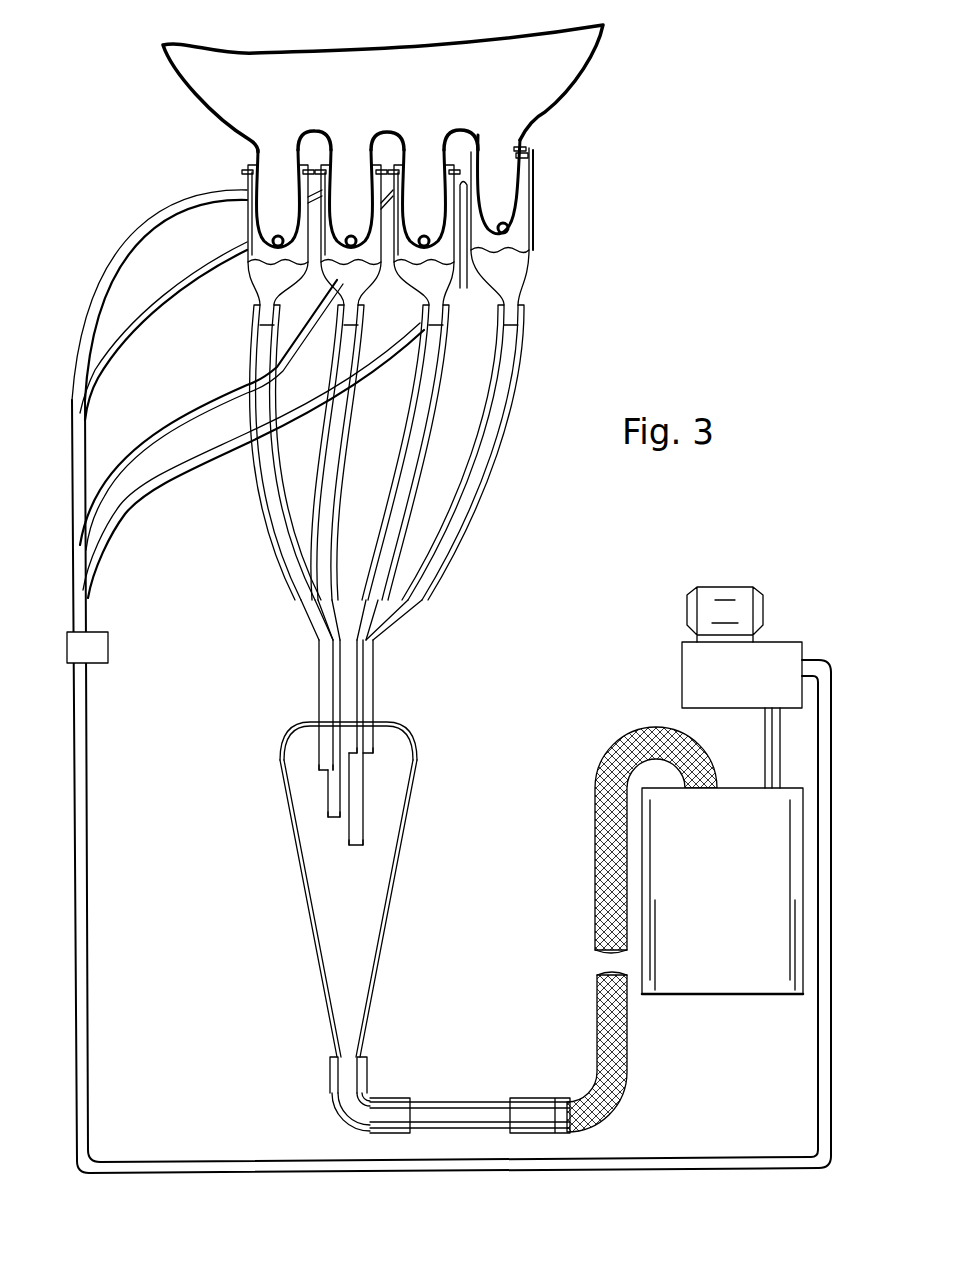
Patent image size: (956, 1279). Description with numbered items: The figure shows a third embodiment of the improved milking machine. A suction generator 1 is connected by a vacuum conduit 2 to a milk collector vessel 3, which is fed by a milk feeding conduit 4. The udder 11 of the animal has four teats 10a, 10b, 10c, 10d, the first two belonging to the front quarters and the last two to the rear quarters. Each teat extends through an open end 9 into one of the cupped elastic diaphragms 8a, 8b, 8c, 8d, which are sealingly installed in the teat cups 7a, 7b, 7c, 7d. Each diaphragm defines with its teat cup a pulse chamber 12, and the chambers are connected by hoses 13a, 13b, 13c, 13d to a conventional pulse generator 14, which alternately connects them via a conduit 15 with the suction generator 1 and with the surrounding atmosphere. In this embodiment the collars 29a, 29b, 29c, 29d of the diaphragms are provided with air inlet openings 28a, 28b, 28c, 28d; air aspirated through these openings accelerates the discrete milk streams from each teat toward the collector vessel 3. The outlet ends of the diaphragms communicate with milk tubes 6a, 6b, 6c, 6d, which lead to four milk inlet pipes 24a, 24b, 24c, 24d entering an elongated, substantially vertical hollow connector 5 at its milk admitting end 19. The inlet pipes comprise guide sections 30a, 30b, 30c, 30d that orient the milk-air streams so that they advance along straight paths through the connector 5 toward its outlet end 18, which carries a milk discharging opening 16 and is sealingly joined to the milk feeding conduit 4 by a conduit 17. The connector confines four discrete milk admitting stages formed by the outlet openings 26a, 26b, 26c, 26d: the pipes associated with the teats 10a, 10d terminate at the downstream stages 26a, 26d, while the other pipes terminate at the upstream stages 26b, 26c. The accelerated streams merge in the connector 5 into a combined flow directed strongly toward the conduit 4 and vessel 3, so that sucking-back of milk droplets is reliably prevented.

The suction generator 1 is at (700, 668).
The vacuum conduit 2 is at (768, 745).
The milk collector vessel 3 is at (742, 992).
The milk feeding conduit 4 is at (610, 1052).
The hollow connector 5 is at (382, 985).
The milk tube 6a is at (445, 380).
The milk tube 6b is at (524, 325).
The milk tube 6c is at (256, 500).
The milk tube 6d is at (345, 440).
The teat cup 7a is at (397, 235).
The teat cup 7b is at (533, 220).
The teat cup 7c is at (250, 212).
The teat cup 7d is at (325, 240).
The cupped elastic diaphragm 8a is at (412, 270).
The cupped elastic diaphragm 8b is at (528, 250).
The cupped elastic diaphragm 8c is at (253, 266).
The cupped elastic diaphragm 8d is at (330, 290).
The open end 9 is at (530, 156).
The teat 10a is at (420, 165).
The teat 10b is at (500, 165).
The teat 10c is at (273, 165).
The teat 10d is at (350, 165).
The udder 11 is at (394, 79).
The pulse chamber 12 is at (525, 188).
The hose 13a is at (140, 440).
The hose 13b is at (172, 470).
The hose 13c is at (125, 250).
The hose 13d is at (140, 320).
The pulse generator 14 is at (100, 648).
The conduit 15 is at (90, 1162).
The milk discharging opening 16 is at (335, 1110).
The conduit 17 is at (450, 1103).
The outlet end 18 is at (368, 1068).
The milk admitting end 19 is at (298, 730).
The milk inlet pipe 24a is at (440, 590).
The milk inlet pipe 24b is at (405, 618).
The milk inlet pipe 24c is at (300, 622).
The milk inlet pipe 24d is at (322, 630).
The outlet opening 26a is at (362, 850).
The outlet opening 26b is at (374, 770).
The outlet opening 26c is at (326, 780).
The outlet opening 26d is at (330, 825).
The air inlet opening 28a is at (408, 168).
The air inlet opening 28b is at (477, 165).
The air inlet opening 28c is at (248, 162).
The air inlet opening 28d is at (335, 168).
The collar 29a is at (455, 168).
The collar 29b is at (528, 149).
The collar 29c is at (309, 168).
The collar 29d is at (381, 168).
The guide section 30a is at (362, 675).
The guide section 30b is at (365, 715).
The guide section 30c is at (325, 705).
The guide section 30d is at (332, 690).